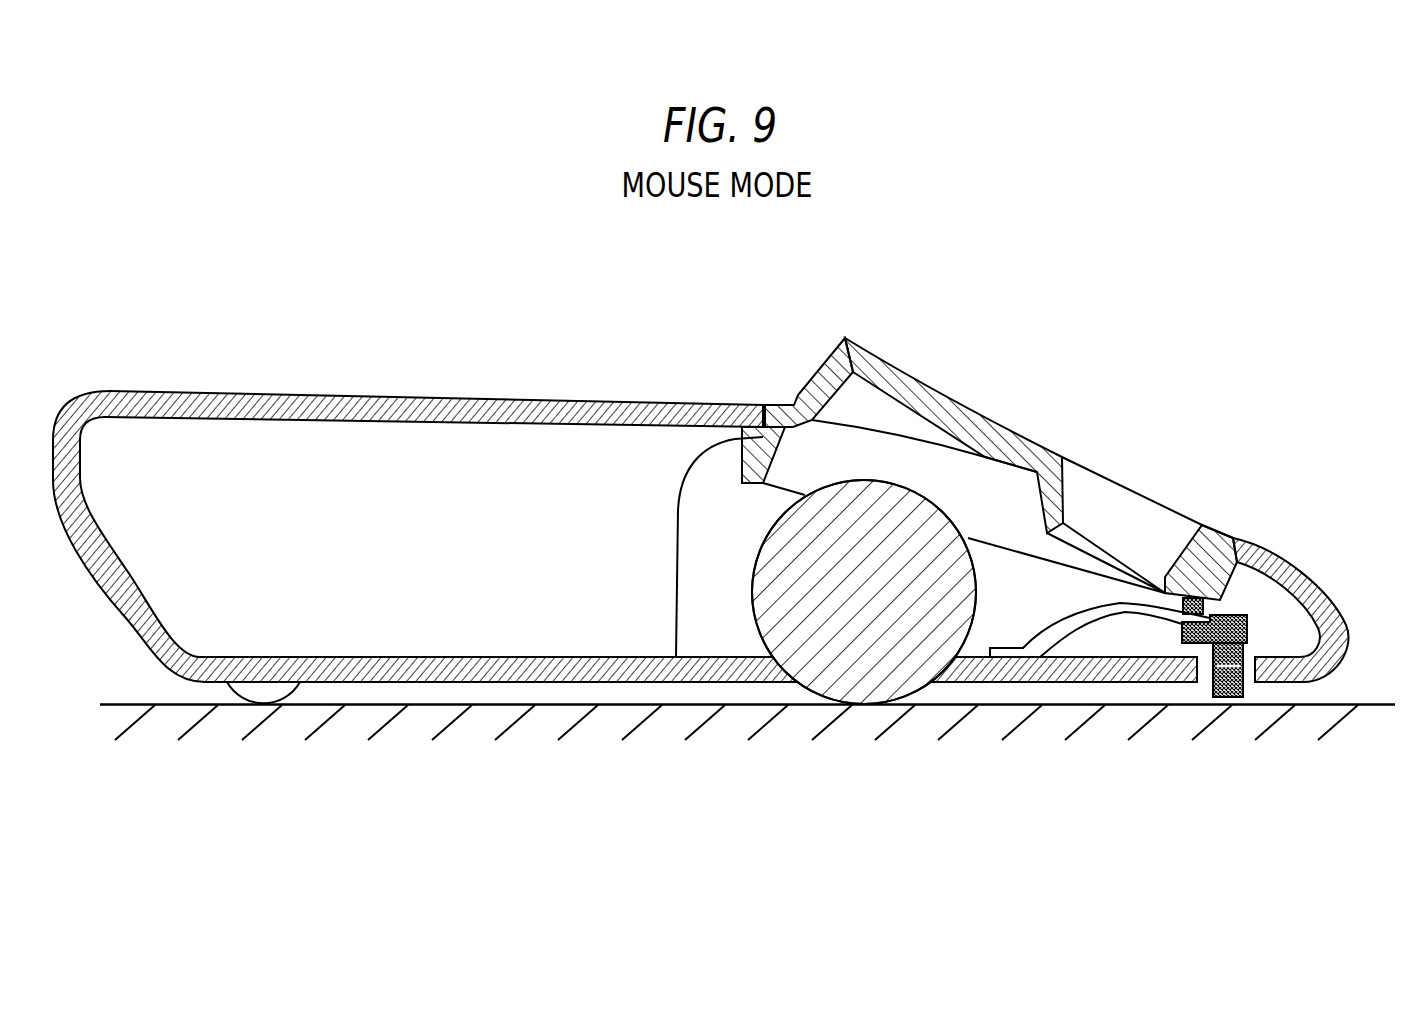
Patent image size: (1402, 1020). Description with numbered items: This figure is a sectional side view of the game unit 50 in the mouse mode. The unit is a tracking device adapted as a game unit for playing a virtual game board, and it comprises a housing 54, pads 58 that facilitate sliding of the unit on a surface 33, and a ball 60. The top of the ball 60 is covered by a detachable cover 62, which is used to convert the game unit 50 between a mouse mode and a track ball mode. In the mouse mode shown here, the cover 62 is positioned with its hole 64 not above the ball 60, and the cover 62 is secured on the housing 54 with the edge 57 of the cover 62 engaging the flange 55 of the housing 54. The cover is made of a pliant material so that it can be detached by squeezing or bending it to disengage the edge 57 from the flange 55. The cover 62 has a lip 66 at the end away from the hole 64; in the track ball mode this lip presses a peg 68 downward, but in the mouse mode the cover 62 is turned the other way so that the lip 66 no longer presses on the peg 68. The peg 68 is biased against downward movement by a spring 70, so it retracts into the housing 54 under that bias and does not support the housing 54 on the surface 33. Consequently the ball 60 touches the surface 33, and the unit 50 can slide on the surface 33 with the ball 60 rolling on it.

The surface 33 is at (462, 735).
The game unit 50 is at (1160, 377).
The housing 54 is at (268, 391).
The flange 55 is at (614, 401).
The edge 57 is at (800, 394).
The pads 58 is at (265, 692).
The ball 60 is at (877, 670).
The detachable cover 62 is at (916, 396).
The hole 64 is at (1093, 552).
The lip 66 is at (680, 500).
The peg 68 is at (1240, 697).
The spring 70 is at (1100, 618).